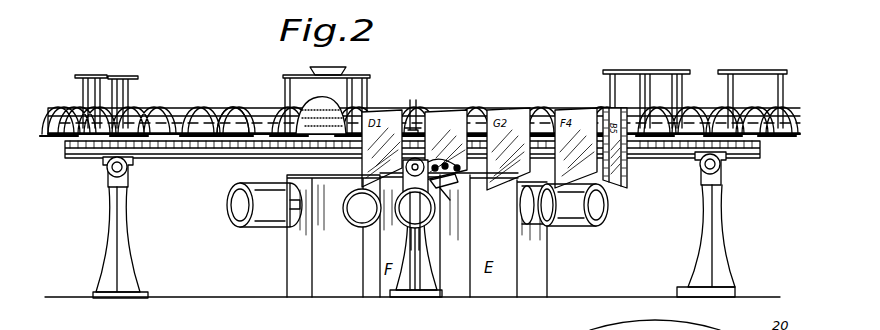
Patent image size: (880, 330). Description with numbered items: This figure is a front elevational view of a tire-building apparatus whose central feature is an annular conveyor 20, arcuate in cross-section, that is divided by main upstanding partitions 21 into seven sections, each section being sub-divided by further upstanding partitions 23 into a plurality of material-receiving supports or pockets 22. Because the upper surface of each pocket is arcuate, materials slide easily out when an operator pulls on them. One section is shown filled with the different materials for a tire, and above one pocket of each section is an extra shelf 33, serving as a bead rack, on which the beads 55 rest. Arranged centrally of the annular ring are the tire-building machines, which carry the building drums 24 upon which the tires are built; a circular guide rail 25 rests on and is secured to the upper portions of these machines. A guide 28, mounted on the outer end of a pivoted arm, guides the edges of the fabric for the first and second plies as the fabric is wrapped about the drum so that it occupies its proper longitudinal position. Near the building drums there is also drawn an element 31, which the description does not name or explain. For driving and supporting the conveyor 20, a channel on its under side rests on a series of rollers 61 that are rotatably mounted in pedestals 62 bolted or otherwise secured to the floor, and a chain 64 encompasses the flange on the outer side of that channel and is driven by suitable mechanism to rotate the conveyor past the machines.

The annular conveyor 20 is at (142, 112).
The main upstanding partitions 21 is at (615, 97).
The material-receiving supports or pockets 22 is at (222, 112).
The upstanding partitions 23 is at (418, 100).
The building drums 24 is at (262, 226).
The circular guide rail 25 is at (290, 176).
The guide 28 is at (450, 196).
The pulley 31 is at (352, 226).
The shelf 33 is at (124, 76).
The beads 55 is at (300, 76).
The rollers 61 is at (133, 170).
The pedestals 62 is at (124, 240).
The chain 64 is at (668, 150).